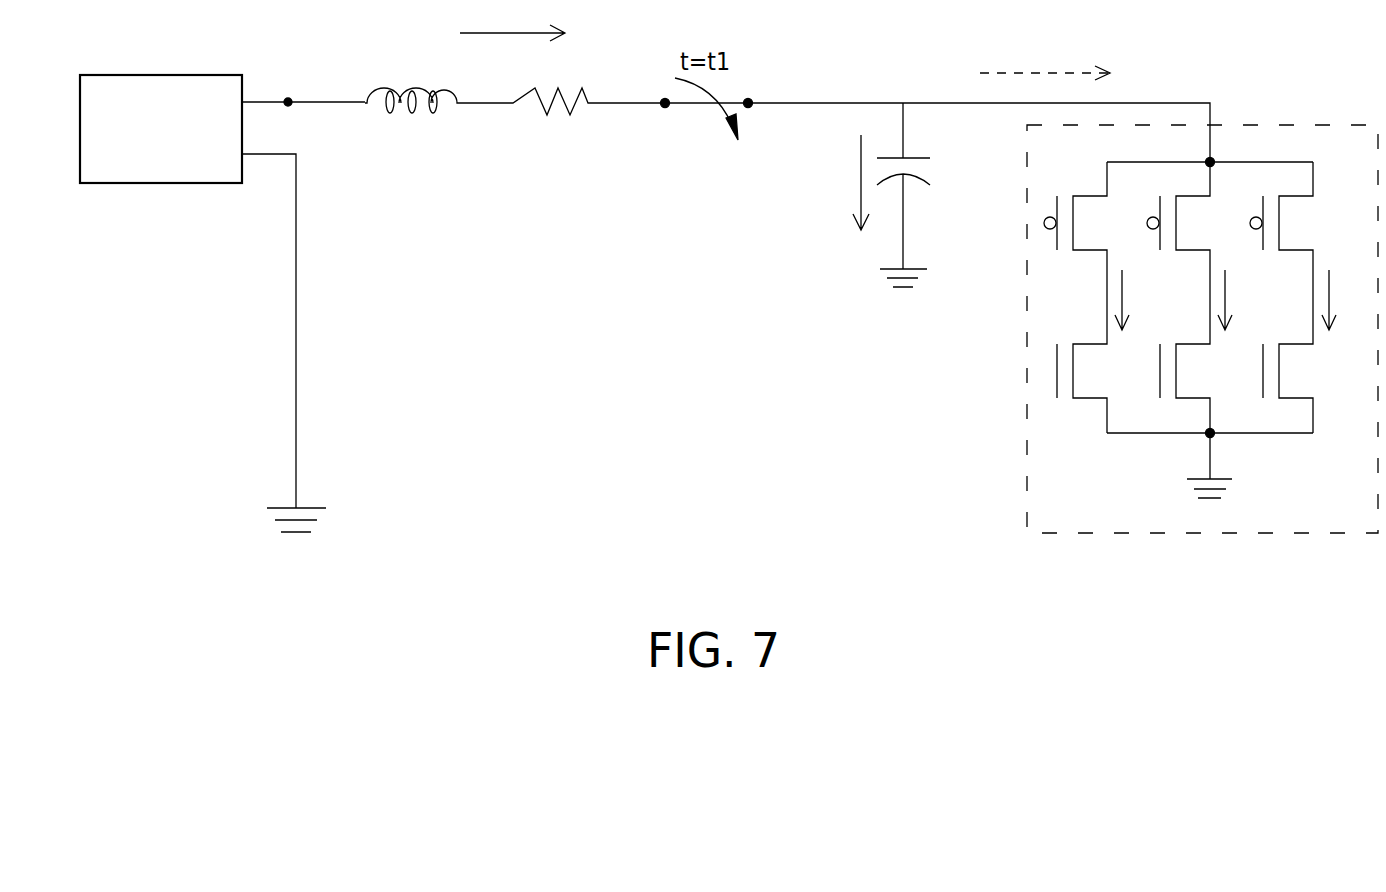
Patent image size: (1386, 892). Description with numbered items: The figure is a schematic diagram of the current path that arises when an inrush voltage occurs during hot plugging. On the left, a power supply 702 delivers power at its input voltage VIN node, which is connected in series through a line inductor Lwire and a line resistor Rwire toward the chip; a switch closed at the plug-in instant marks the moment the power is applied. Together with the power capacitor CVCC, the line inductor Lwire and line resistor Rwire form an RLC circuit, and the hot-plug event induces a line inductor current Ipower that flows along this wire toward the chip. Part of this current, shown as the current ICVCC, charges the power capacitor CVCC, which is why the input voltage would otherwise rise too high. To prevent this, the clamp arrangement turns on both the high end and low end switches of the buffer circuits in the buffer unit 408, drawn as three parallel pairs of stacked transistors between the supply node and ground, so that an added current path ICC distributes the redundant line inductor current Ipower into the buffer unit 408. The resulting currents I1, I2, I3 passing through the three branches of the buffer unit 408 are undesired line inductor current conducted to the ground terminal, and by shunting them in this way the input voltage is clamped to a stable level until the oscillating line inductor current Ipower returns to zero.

The power supply 702 is at (161, 75).
The buffer unit 408 is at (1202, 295).
The input voltage VIN is at (303, 88).
The line inductor Lwire is at (411, 81).
The line resistor Rwire is at (561, 82).
The line inductor current Ipower is at (512, 22).
The power capacitor CVCC is at (942, 195).
The power capacitor current ICVCC is at (816, 182).
The current path ICC is at (1045, 59).
The current I1 is at (1132, 300).
The current I2 is at (1235, 300).
The current I3 is at (1339, 300).